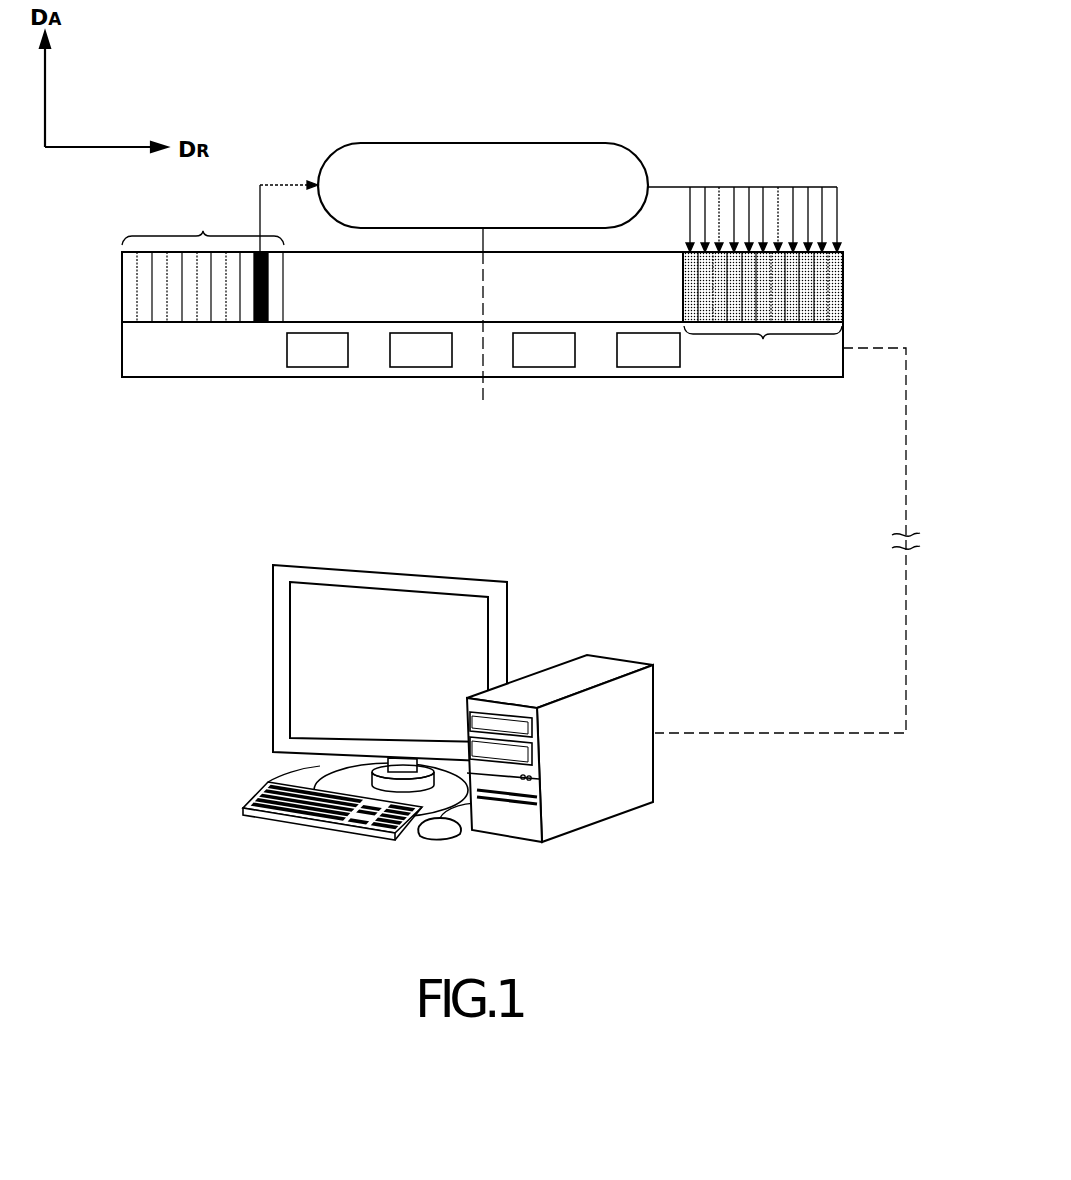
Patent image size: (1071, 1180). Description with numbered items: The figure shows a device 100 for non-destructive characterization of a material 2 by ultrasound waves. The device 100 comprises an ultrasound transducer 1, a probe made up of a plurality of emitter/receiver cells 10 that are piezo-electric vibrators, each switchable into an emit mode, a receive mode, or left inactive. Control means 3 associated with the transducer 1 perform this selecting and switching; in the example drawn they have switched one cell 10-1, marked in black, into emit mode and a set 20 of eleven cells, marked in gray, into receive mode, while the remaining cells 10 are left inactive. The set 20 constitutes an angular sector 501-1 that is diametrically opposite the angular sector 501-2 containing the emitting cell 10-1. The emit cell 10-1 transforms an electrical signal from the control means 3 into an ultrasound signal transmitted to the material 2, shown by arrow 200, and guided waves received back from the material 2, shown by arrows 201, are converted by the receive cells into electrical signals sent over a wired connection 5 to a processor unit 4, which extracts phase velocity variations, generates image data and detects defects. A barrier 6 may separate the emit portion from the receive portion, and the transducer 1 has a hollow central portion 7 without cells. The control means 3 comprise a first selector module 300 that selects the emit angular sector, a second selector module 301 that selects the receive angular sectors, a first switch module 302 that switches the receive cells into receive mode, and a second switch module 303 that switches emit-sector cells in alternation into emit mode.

The ultrasound transducer 1 is at (860, 283).
The material 2 is at (490, 199).
The control means 3 is at (146, 351).
The processor unit 4 is at (613, 667).
The wired connection 5 is at (908, 477).
The barrier 6 is at (482, 357).
The central portion 7 is at (373, 300).
The emitter/receiver cells 10 is at (131, 285).
The cell in emit mode 10-1 is at (258, 325).
The set of cells in receive mode 20 is at (763, 310).
The device for non-destructive characterization 100 is at (350, 703).
The arrow of transmitted ultrasound signal 200 is at (269, 183).
The arrows of received ultrasound signals 201 is at (757, 185).
The first selector module 300 is at (317, 350).
The second selector module 301 is at (421, 350).
The first switch module 302 is at (544, 350).
The second switch module 303 is at (648, 350).
The angular sector 501-1 is at (763, 310).
The angular sector 501-2 is at (203, 225).